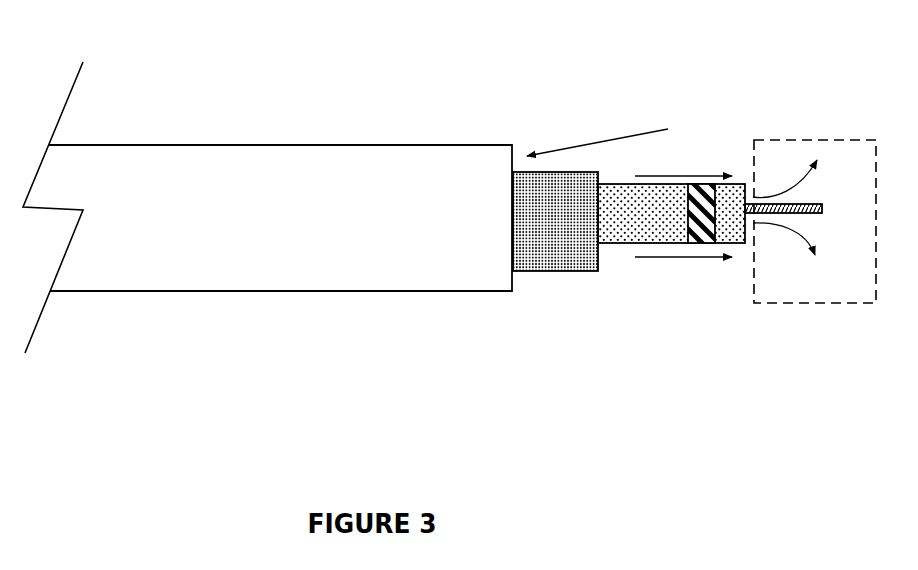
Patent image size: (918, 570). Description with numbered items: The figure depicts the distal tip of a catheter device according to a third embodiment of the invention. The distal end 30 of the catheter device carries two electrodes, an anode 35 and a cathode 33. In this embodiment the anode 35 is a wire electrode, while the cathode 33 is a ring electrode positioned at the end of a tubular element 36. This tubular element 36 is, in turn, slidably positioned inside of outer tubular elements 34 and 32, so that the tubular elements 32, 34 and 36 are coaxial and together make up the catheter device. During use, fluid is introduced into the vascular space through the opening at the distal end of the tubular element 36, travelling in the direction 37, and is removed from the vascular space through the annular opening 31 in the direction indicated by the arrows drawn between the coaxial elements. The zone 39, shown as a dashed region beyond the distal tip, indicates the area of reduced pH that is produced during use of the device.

The distal end 30 is at (266, 105).
The annular opening 31 is at (527, 284).
The outer tubular element 32 is at (247, 228).
The cathode 33 is at (693, 187).
The outer tubular element 34 is at (552, 230).
The anode 35 is at (780, 202).
The tubular element 36 is at (623, 220).
The direction 37 is at (801, 203).
The zone 39 is at (793, 308).